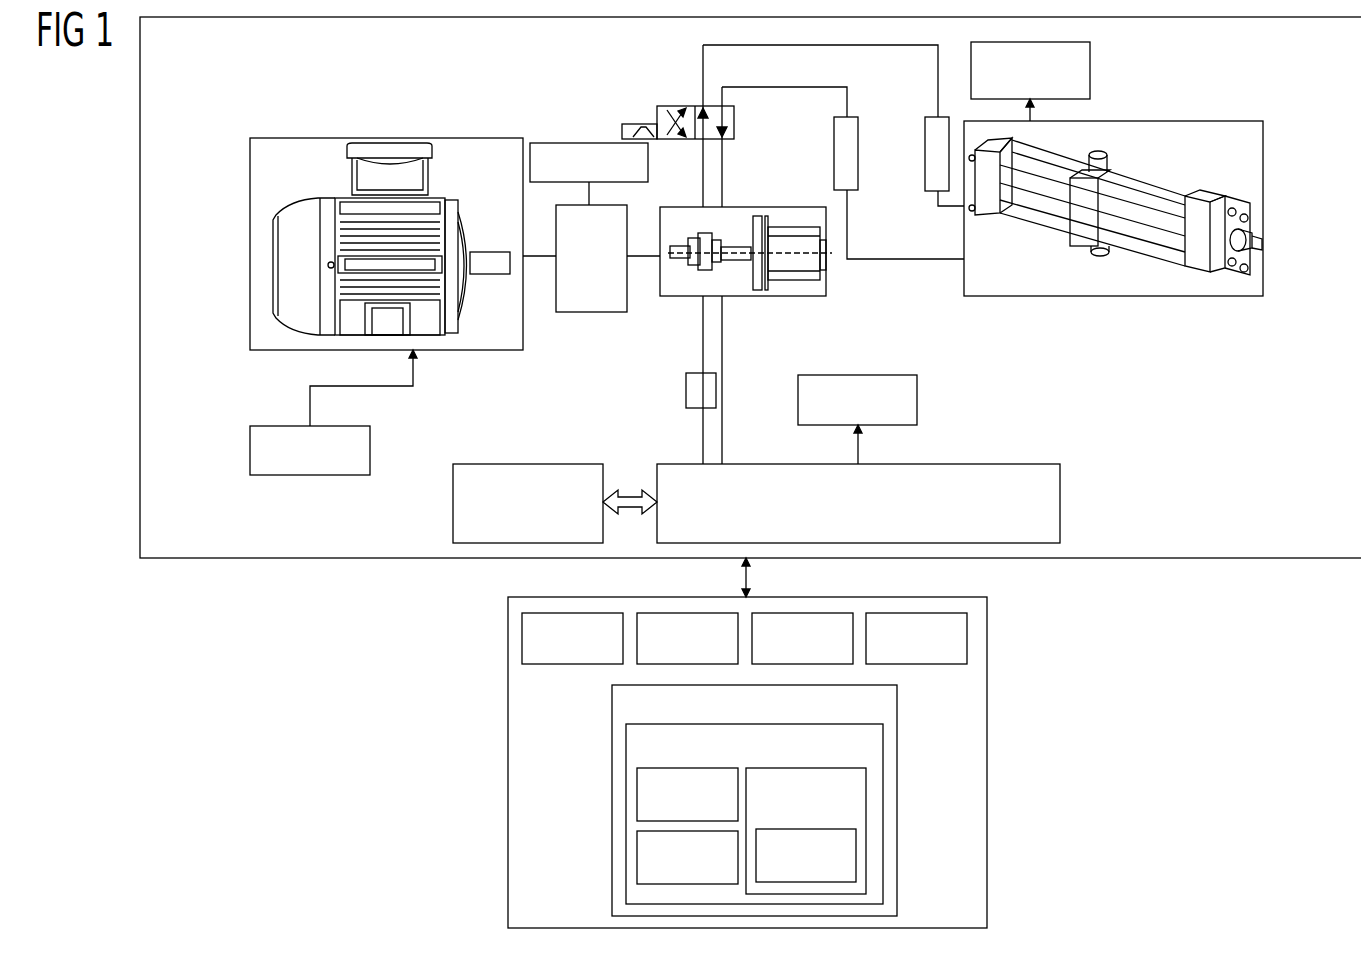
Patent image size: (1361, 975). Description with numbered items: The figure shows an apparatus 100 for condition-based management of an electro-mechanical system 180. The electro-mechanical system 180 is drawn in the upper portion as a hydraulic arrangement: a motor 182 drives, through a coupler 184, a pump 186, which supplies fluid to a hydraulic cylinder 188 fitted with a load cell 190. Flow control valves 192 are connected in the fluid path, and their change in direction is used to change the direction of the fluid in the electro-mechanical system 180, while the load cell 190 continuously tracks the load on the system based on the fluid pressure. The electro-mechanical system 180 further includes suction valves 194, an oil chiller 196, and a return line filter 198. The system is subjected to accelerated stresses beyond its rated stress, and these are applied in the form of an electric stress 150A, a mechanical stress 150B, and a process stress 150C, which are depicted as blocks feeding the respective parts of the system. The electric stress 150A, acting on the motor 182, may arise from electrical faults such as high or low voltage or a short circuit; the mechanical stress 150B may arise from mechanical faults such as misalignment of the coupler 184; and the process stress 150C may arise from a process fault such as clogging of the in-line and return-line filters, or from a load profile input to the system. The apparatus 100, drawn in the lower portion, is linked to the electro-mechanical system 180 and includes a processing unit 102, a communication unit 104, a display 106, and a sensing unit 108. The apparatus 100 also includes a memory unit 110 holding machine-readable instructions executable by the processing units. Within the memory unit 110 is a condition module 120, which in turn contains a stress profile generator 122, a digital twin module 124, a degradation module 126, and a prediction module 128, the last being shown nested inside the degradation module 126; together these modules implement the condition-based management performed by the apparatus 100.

The apparatus 100 is at (518, 917).
The processing unit 102 is at (551, 653).
The communication unit 104 is at (666, 653).
The display 106 is at (781, 653).
The sensing unit 108 is at (895, 653).
The memory unit 110 is at (847, 722).
The condition module 120 is at (831, 762).
The stress profile generator 122 is at (666, 808).
The digital twin module 124 is at (666, 872).
The degradation module 126 is at (819, 802).
The prediction module 128 is at (785, 870).
The electric stress 150A is at (282, 465).
The mechanical stress 150B is at (561, 177).
The process stress 150C is at (1003, 85).
The electro-mechanical system 180 is at (263, 545).
The motor 182 is at (250, 138).
The coupler 184 is at (571, 275).
The pump 186 is at (826, 296).
The hydraulic cylinder 188 is at (1237, 140).
The load cell 190 is at (1247, 233).
The flow control valves 192 is at (858, 117).
The suction valves 194 is at (687, 408).
The oil chiller 196 is at (507, 517).
The return line filter 198 is at (837, 517).